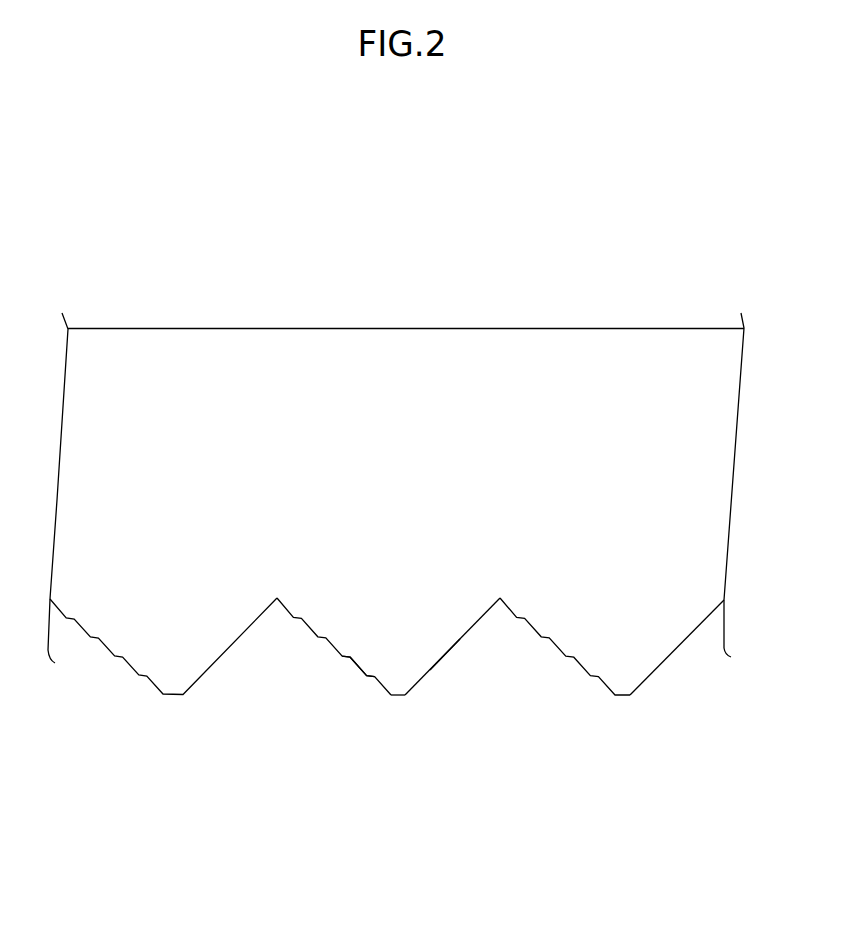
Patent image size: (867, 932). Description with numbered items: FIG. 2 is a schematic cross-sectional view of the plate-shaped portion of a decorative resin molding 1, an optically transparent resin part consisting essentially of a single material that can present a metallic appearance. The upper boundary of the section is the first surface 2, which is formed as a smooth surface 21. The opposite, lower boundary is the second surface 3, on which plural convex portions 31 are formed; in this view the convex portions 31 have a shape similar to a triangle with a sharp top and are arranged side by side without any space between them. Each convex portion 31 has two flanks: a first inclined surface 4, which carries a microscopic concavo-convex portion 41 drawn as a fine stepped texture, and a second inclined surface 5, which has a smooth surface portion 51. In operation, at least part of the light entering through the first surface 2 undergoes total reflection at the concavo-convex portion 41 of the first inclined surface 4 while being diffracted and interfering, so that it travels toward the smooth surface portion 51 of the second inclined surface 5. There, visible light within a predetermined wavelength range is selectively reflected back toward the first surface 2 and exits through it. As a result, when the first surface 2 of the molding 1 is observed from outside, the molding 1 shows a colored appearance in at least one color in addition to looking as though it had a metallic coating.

The decorative resin molding 1 is at (396, 495).
The first surface 2 is at (255, 325).
The smooth surface 21 is at (440, 326).
The second surface 3 is at (662, 669).
The convex portion 31 is at (393, 675).
The first inclined surface 4 is at (297, 623).
The microscopic concavo-convex portion 41 is at (360, 673).
The second inclined surface 5 is at (483, 628).
The smooth surface portion 51 is at (440, 660).